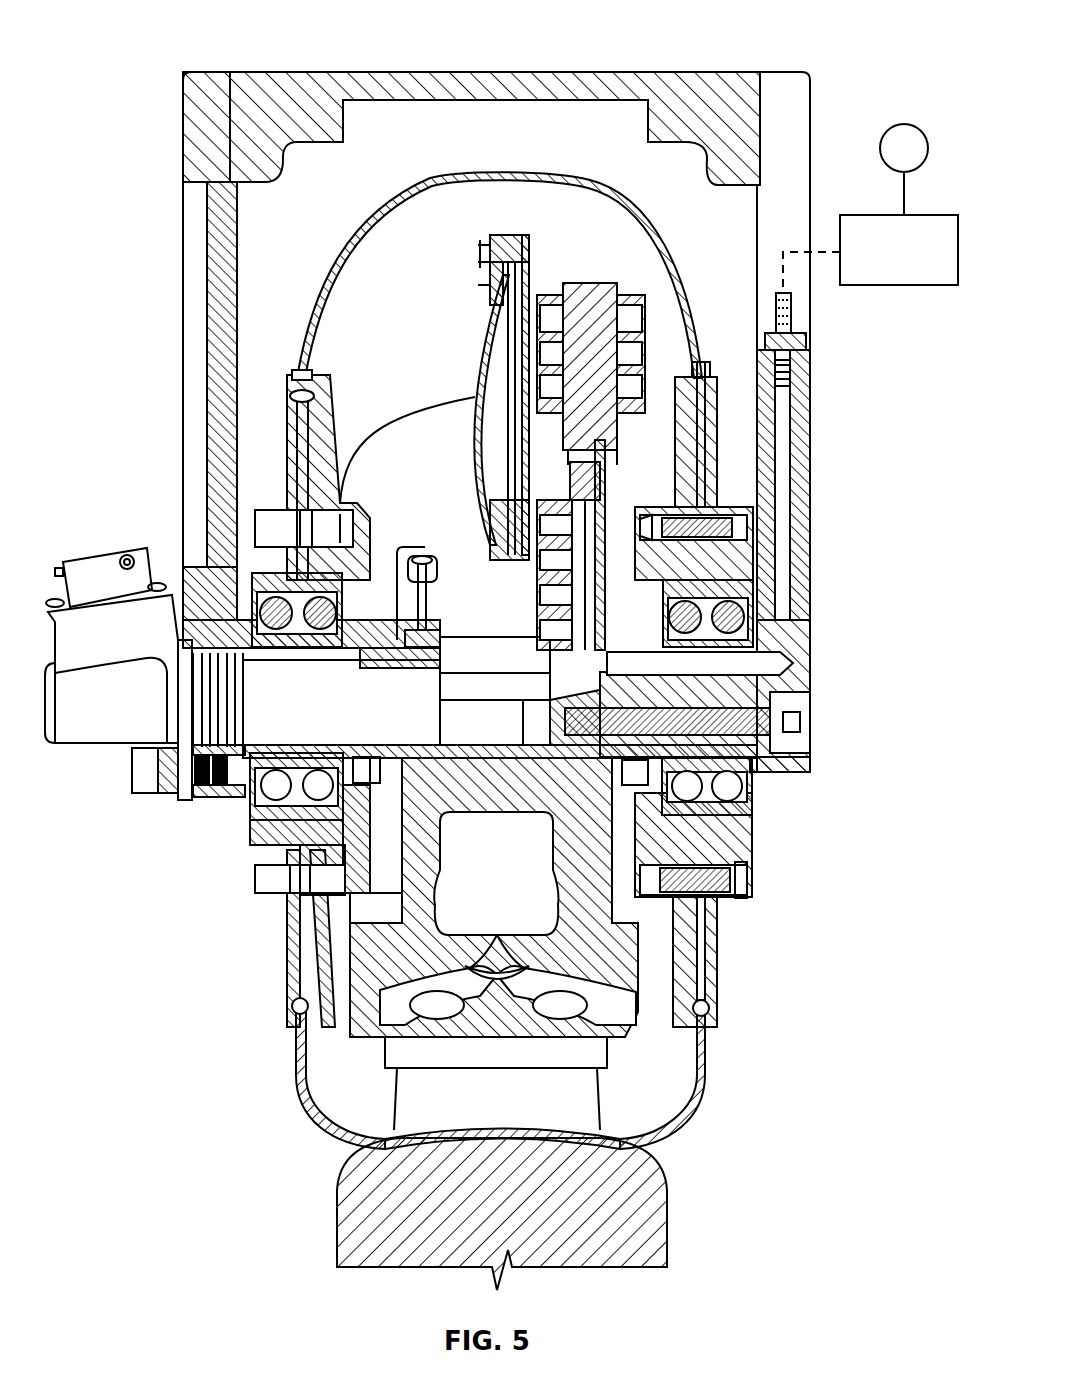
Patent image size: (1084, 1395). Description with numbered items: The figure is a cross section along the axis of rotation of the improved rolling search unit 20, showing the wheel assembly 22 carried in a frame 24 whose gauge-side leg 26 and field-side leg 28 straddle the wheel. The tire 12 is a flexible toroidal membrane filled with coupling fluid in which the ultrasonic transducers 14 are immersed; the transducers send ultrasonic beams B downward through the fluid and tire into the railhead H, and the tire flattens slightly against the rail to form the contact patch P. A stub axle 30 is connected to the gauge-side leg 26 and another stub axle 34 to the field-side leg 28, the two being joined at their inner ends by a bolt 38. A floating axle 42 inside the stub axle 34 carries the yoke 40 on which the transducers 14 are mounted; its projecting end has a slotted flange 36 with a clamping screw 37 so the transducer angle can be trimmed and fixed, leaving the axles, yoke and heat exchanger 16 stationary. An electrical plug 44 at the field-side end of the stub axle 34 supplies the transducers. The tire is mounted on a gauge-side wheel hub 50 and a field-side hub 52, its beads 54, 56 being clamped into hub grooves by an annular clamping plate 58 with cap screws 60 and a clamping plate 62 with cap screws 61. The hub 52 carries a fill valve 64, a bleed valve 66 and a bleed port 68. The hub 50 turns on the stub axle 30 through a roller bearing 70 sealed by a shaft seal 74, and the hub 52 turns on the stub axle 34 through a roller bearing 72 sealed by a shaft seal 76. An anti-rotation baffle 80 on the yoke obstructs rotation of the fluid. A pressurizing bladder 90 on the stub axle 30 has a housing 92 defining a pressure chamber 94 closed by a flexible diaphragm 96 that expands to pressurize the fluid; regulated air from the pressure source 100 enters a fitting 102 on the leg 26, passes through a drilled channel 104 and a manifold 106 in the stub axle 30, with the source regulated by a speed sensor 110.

The rolling search unit 20 is at (145, 32).
The frame 24 is at (275, 68).
The leg at the gauge side 26 is at (808, 112).
The leg at the field side 28 is at (185, 242).
The wheel assembly 22 is at (362, 177).
The tire 12 is at (368, 212).
The heat exchanger 16 is at (582, 285).
The housing 92 is at (532, 280).
The pressurizing bladder 90 is at (526, 442).
The anti-rotation baffle 80 is at (400, 408).
The flexible diaphragm 96 is at (480, 380).
The pressure chamber 94 is at (480, 440).
The fitting 102 is at (806, 334).
The drilled channel 104 is at (790, 410).
The regulated pressure source 100 is at (888, 287).
The speed sensor 110 is at (900, 126).
The hub 52 is at (313, 430).
The fill valve 64 is at (262, 527).
The wheel hub 50 is at (715, 470).
The electrical plug 44 is at (95, 568).
The roller bearing 72 is at (262, 590).
The roller bearing 70 is at (755, 588).
The shaft seal 76 is at (428, 615).
The shaft seal 74 is at (560, 632).
The manifold 106 is at (782, 663).
The stub axle 34 is at (340, 660).
The floating axle 42 is at (421, 691).
The stub axle 30 is at (812, 682).
The bolt 38 is at (800, 722).
The clamping screw 37 is at (132, 772).
The slotted flange 36 is at (182, 795).
The cap screws 61 is at (255, 835).
The cap screws 60 is at (748, 868).
The bleed valve 66 is at (258, 882).
The yoke 40 is at (555, 880).
The ultrasonic transducers 14 is at (497, 935).
The bleed port 68 is at (318, 955).
The clamping plate 62 is at (290, 985).
The annular clamping plate 58 is at (718, 958).
The bead 56 is at (292, 1010).
The bead 54 is at (709, 1012).
The contact patch P is at (485, 1130).
The ultrasonic beams B is at (496, 1083).
The railhead H is at (660, 1225).